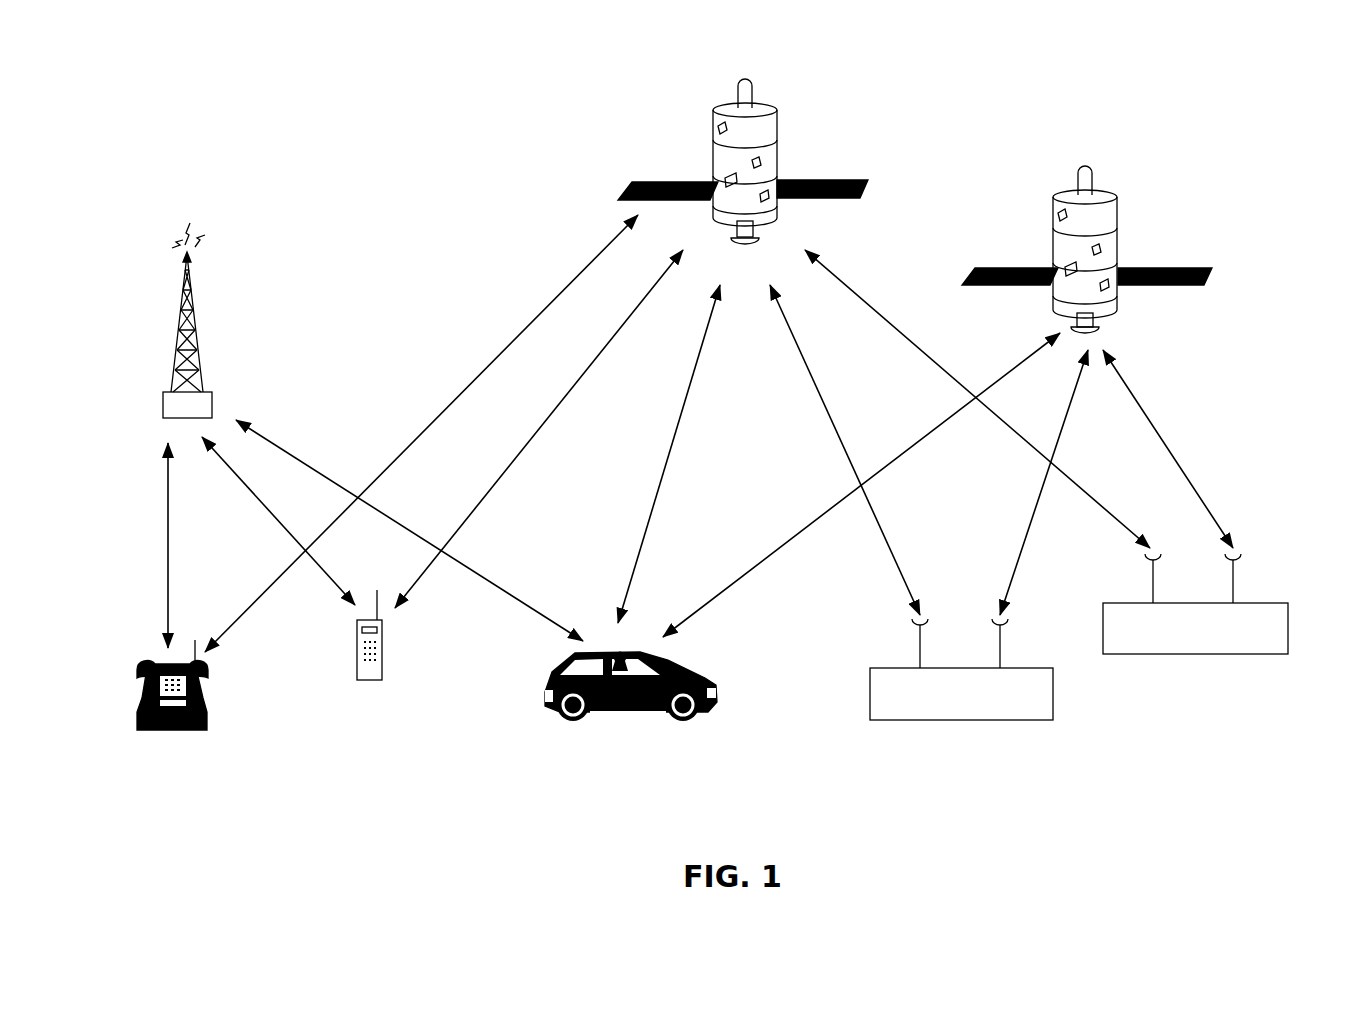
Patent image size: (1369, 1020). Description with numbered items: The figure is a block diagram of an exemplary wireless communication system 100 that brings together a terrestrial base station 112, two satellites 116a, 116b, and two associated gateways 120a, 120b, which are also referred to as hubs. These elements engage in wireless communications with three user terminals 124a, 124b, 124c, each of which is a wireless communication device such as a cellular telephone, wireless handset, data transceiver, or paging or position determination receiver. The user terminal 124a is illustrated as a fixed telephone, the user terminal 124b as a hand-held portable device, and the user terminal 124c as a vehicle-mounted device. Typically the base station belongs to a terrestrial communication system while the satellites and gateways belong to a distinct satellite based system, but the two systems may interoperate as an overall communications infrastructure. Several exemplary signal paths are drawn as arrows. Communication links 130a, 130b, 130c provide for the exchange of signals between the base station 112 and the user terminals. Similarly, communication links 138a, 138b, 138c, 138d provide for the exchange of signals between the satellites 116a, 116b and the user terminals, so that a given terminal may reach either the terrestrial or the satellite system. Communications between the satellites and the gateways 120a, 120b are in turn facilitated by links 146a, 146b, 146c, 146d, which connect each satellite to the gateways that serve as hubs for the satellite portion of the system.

The wireless communication system 100 is at (386, 160).
The base station 112 is at (210, 392).
The satellite 116a is at (716, 108).
The satellite 116b is at (1113, 200).
The gateway 120a is at (870, 690).
The gateway 120b is at (1289, 624).
The user terminal 124a is at (145, 668).
The user terminal 124b is at (358, 666).
The user terminal 124c is at (548, 690).
The communication link 130a is at (165, 500).
The communication link 130b is at (266, 508).
The communication link 130c is at (290, 455).
The communication link 138a is at (538, 317).
The communication link 138b is at (574, 387).
The communication link 138c is at (688, 390).
The communication link 138d is at (848, 495).
The link 146a is at (815, 386).
The link 146b is at (915, 345).
The link 146c is at (1060, 436).
The link 146d is at (1150, 422).